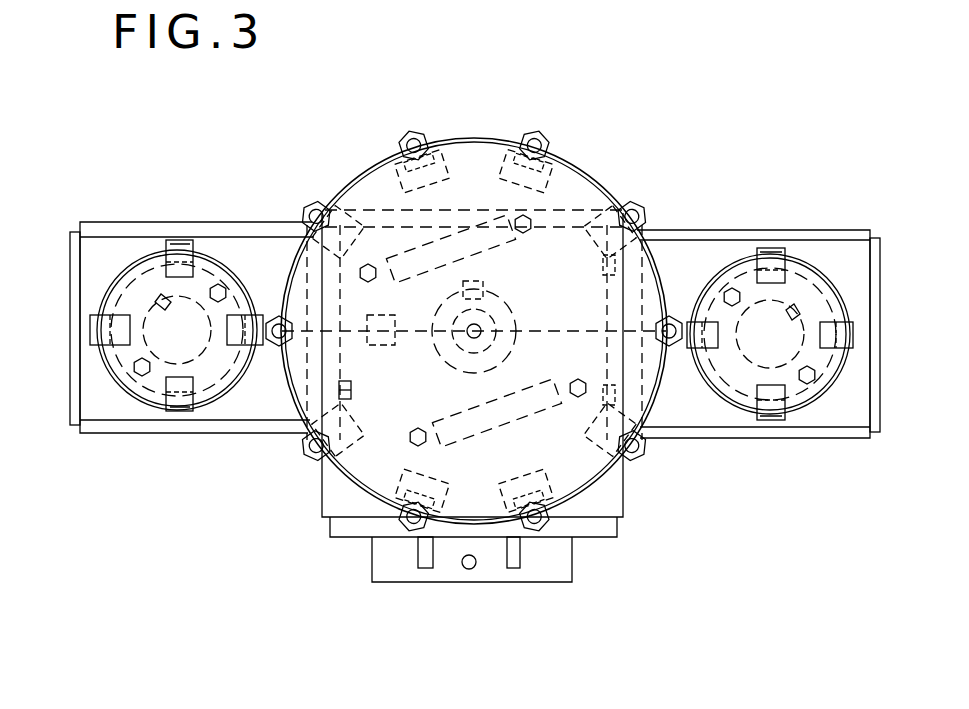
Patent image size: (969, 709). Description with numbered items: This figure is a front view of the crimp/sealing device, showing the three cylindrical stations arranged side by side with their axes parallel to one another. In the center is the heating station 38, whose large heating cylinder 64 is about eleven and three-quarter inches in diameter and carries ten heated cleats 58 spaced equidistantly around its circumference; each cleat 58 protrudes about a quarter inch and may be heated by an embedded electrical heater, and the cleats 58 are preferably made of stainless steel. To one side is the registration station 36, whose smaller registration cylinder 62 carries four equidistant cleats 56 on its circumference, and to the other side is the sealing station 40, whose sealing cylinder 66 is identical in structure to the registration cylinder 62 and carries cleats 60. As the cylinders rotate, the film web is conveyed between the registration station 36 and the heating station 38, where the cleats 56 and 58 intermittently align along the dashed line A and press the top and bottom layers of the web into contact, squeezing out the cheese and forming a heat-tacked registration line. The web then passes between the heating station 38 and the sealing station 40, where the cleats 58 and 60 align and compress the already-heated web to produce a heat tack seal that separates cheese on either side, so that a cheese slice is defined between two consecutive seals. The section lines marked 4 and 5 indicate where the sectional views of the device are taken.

The registration station 36 is at (882, 280).
The heating station 38 is at (603, 183).
The sealing station 40 is at (70, 310).
The cleats 56 is at (700, 320).
The cleats 58 is at (304, 210).
The cleats 60 is at (259, 347).
The registration cylinder 62 is at (795, 275).
The heating cylinder 64 is at (565, 185).
The sealing cylinder 66 is at (142, 278).
The section line 4- 4 is at (267, 375).
The section line 5- 5 is at (420, 80).